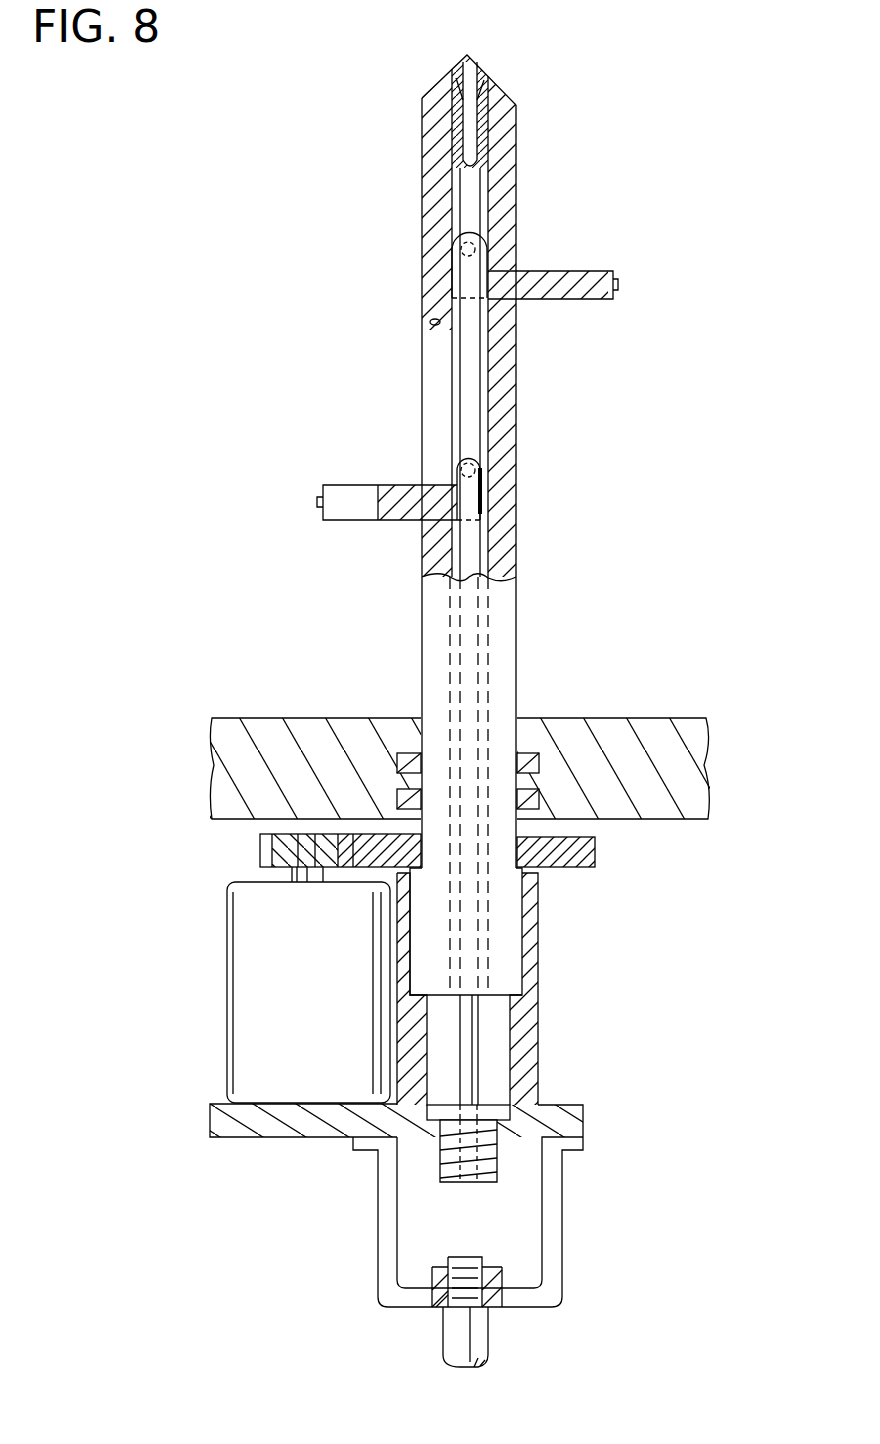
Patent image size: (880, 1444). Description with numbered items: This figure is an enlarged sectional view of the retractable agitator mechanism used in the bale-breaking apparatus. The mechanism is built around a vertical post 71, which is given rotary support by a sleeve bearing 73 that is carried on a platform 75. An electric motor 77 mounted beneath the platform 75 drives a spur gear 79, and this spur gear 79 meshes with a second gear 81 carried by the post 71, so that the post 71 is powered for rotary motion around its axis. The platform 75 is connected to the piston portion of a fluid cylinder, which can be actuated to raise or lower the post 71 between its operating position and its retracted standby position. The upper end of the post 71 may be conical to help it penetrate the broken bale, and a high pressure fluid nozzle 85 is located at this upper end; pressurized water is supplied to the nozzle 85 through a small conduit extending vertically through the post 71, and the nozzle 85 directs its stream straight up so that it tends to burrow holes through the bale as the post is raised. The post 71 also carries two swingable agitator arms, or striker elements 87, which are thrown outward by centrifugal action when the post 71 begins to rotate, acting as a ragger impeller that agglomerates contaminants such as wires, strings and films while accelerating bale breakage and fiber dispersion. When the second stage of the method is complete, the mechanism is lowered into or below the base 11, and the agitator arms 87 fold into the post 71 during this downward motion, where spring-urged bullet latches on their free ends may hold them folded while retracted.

The base 11 is at (634, 722).
The vertical post 71 is at (518, 606).
The sleeve bearing 73 is at (534, 1045).
The platform 75 is at (282, 1130).
The electric motor 77 is at (242, 972).
The spur gear 79 is at (262, 848).
The second gear 81 is at (562, 868).
The high pressure fluid nozzle 85 is at (488, 78).
The swingable agitator arms 87 is at (560, 299).